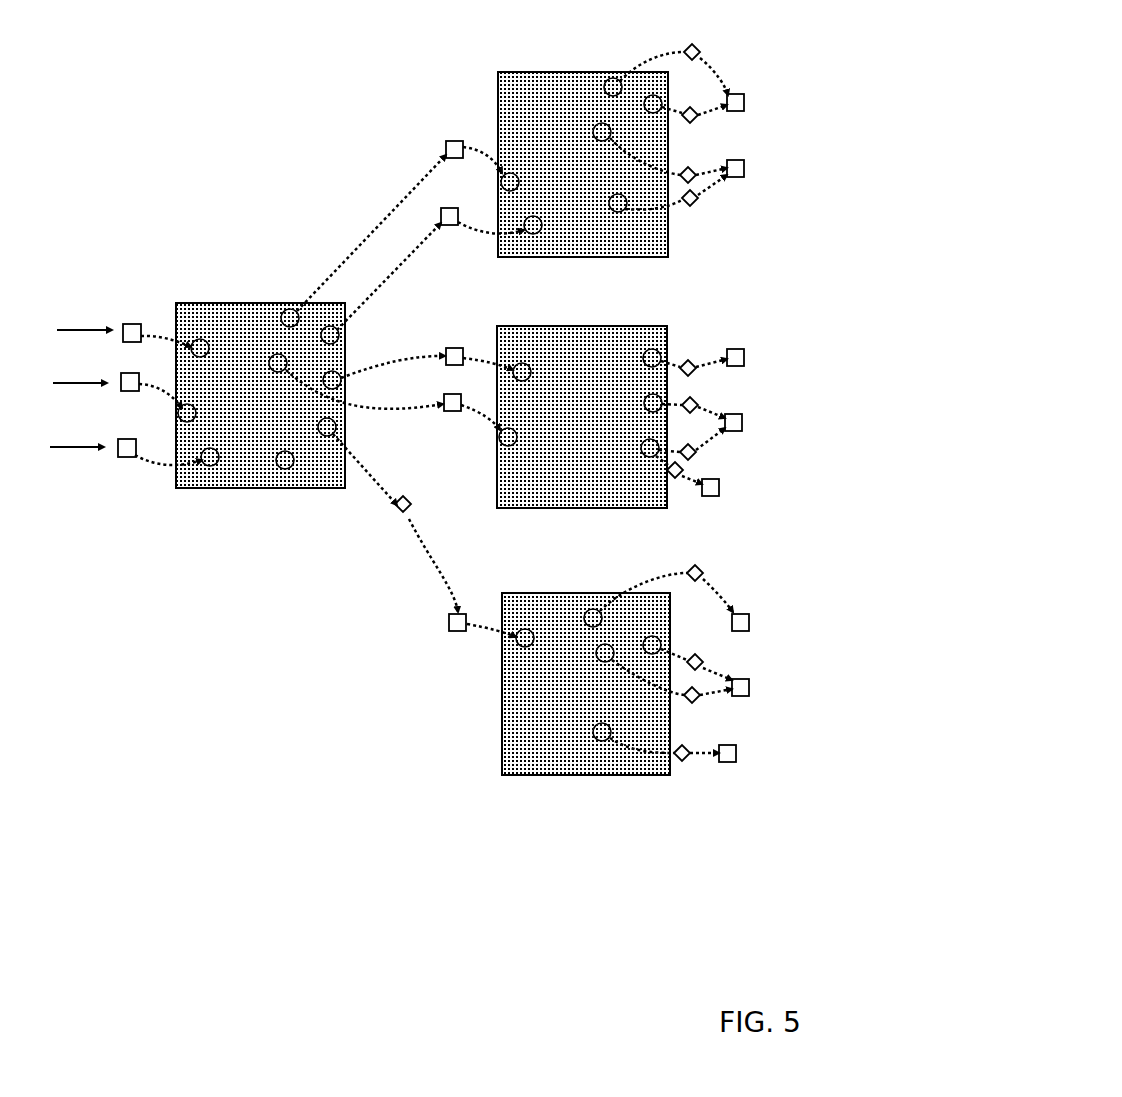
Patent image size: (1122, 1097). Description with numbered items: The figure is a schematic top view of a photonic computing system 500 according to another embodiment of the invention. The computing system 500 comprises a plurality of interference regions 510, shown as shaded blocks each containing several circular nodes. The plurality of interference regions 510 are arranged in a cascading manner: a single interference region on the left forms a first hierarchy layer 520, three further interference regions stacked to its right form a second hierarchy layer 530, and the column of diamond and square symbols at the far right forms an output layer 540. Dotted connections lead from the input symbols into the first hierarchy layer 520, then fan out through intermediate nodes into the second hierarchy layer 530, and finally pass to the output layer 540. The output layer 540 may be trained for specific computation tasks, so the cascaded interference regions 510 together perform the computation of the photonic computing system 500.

The photonic computing system 500 is at (897, 948).
The interference region 510 is at (238, 330).
The first hierarchy layer 520 is at (387, 843).
The second hierarchy layer 530 is at (477, 843).
The output layer 540 is at (687, 843).